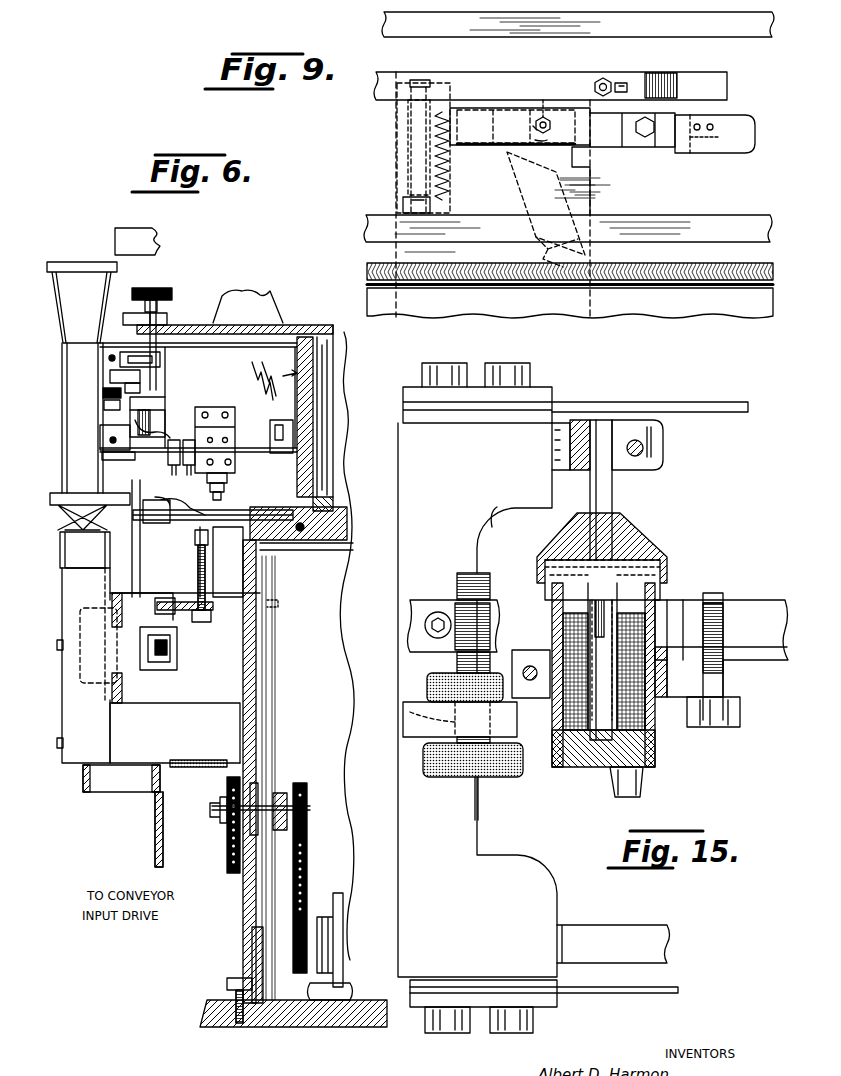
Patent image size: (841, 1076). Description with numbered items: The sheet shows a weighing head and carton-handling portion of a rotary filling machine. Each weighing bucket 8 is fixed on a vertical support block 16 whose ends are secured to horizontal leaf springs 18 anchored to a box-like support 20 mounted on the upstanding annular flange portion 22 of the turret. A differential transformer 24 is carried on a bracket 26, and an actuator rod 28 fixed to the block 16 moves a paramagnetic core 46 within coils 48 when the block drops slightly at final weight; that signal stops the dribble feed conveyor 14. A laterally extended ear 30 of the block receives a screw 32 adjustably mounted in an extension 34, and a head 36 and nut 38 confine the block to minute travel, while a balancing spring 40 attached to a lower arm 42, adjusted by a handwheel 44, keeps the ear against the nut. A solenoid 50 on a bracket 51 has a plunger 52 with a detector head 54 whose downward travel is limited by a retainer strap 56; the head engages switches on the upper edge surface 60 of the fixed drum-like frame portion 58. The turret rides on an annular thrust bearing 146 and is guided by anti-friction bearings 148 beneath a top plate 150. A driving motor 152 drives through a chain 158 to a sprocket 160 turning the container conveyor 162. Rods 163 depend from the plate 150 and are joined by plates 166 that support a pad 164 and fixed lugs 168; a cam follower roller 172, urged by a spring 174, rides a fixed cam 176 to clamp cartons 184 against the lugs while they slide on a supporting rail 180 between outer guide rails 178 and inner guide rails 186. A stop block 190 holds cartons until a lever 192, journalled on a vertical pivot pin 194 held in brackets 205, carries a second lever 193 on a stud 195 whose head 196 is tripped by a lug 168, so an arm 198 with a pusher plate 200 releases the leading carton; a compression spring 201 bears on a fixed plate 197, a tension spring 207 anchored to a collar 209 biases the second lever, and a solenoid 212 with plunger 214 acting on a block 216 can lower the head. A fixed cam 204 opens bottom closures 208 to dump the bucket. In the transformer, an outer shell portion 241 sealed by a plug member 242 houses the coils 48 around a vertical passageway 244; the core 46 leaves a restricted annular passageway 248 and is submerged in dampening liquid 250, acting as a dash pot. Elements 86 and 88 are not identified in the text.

In FIG. 6, the weighing bucket 8 is at (50, 292).
In FIG. 6, the dribble feed conveyor 14 is at (144, 228).
In FIG. 6, the support block 16 is at (102, 390).
In FIG. 15, the support block 16 is at (504, 521).
In FIG. 6, the horizontal leaf springs 18 is at (197, 325).
In FIG. 15, the horizontal leaf springs 18 is at (685, 402).
In FIG. 6, the box-like support 20 is at (314, 372).
In FIG. 6, the upstanding annular flange portion 22 is at (316, 395).
In FIG. 6, the differential transformer 24 is at (110, 373).
In FIG. 15, the differential transformer 24 is at (659, 762).
In FIG. 6, the bracket 26 is at (163, 390).
In FIG. 15, the bracket 26 is at (725, 728).
In FIG. 6, the actuator rod 28 is at (120, 353).
In FIG. 15, the actuator rod 28 is at (615, 491).
In FIG. 6, the laterally extended ear 30 is at (105, 415).
In FIG. 15, the laterally extended ear 30 is at (410, 727).
In FIG. 6, the screw 32 is at (125, 387).
In FIG. 15, the screw 32 is at (410, 710).
In FIG. 6, the extension 34 is at (104, 404).
In FIG. 15, the extension 34 is at (420, 600).
In FIG. 15, the head 36 is at (494, 778).
In FIG. 15, the nut 38 is at (435, 674).
In FIG. 6, the balancing spring 40 is at (165, 408).
In FIG. 6, the lower arm 42 is at (105, 454).
In FIG. 15, the lower arm 42 is at (590, 928).
In FIG. 6, the handwheel 44 is at (156, 290).
In FIG. 15, the paramagnetic core 46 is at (563, 711).
In FIG. 15, the coils 48 is at (666, 636).
In FIG. 6, the solenoid 50 is at (230, 408).
In FIG. 6, the bracket 51 is at (217, 407).
In FIG. 6, the plunger 52 is at (229, 475).
In FIG. 6, the detector head 54 is at (225, 486).
In FIG. 6, the retainer strap 56 is at (220, 498).
In FIG. 6, the drum-like frame portion 58 is at (258, 620).
In FIG. 6, the upper edge surface 60 is at (275, 508).
In FIG. 6, the cylinder 86 is at (188, 470).
In FIG. 6, the cylinder 88 is at (168, 455).
In FIG. 6, the annular thrust bearing 146 is at (335, 494).
In FIG. 6, the anti-friction bearings 148 is at (315, 550).
In FIG. 6, the top plate 150 is at (330, 325).
In FIG. 6, the driving motor 152 is at (338, 896).
In FIG. 6, the chain 158 is at (307, 876).
In FIG. 6, the sprocket 160 is at (223, 827).
In FIG. 9, the container conveyor 162 is at (657, 264).
In FIG. 6, the container conveyor 162 is at (201, 758).
In FIG. 6, the rods 163 is at (118, 553).
In FIG. 6, the pad 164 is at (110, 574).
In FIG. 6, the plates 166 is at (208, 705).
In FIG. 6, the fixed lugs 168 is at (77, 620).
In FIG. 6, the cam follower roller 172 is at (168, 595).
In FIG. 6, the spring 174 is at (169, 649).
In FIG. 6, the fixed cam 176 is at (182, 612).
In FIG. 6, the outer guide rails 178 is at (55, 646).
In FIG. 6, the supporting rail 180 is at (85, 793).
In FIG. 6, the cartons 184 is at (60, 585).
In FIG. 9, the inner guide rails 186 is at (534, 36).
In FIG. 9, the stop block 190 is at (600, 74).
In FIG. 9, the lever 192 is at (446, 78).
In FIG. 9, the second lever 193 is at (662, 142).
In FIG. 9, the vertical pivot pin 194 is at (413, 185).
In FIG. 9, the stud 195 is at (540, 142).
In FIG. 9, the head 196 is at (717, 145).
In FIG. 9, the fixed plate 197 is at (588, 181).
In FIG. 9, the arm 198 is at (594, 145).
In FIG. 9, the pusher plate 200 is at (478, 107).
In FIG. 9, the compression spring 201 is at (542, 100).
In FIG. 6, the fixed cam 204 is at (158, 524).
In FIG. 9, the brackets 205 is at (438, 60).
In FIG. 9, the tension spring 207 is at (449, 160).
In FIG. 6, the bottom closures 208 is at (57, 521).
In FIG. 9, the collar 209 is at (405, 195).
In FIG. 9, the solenoid 212 is at (538, 244).
In FIG. 9, the plunger 214 is at (525, 184).
In FIG. 9, the block 216 is at (538, 123).
In FIG. 15, the outer shell portion 241 is at (553, 604).
In FIG. 15, the plug member 242 is at (573, 767).
In FIG. 15, the vertical passageway 244 is at (565, 631).
In FIG. 15, the restricted annular passageway 248 is at (653, 713).
In FIG. 15, the dampening liquid 250 is at (662, 588).